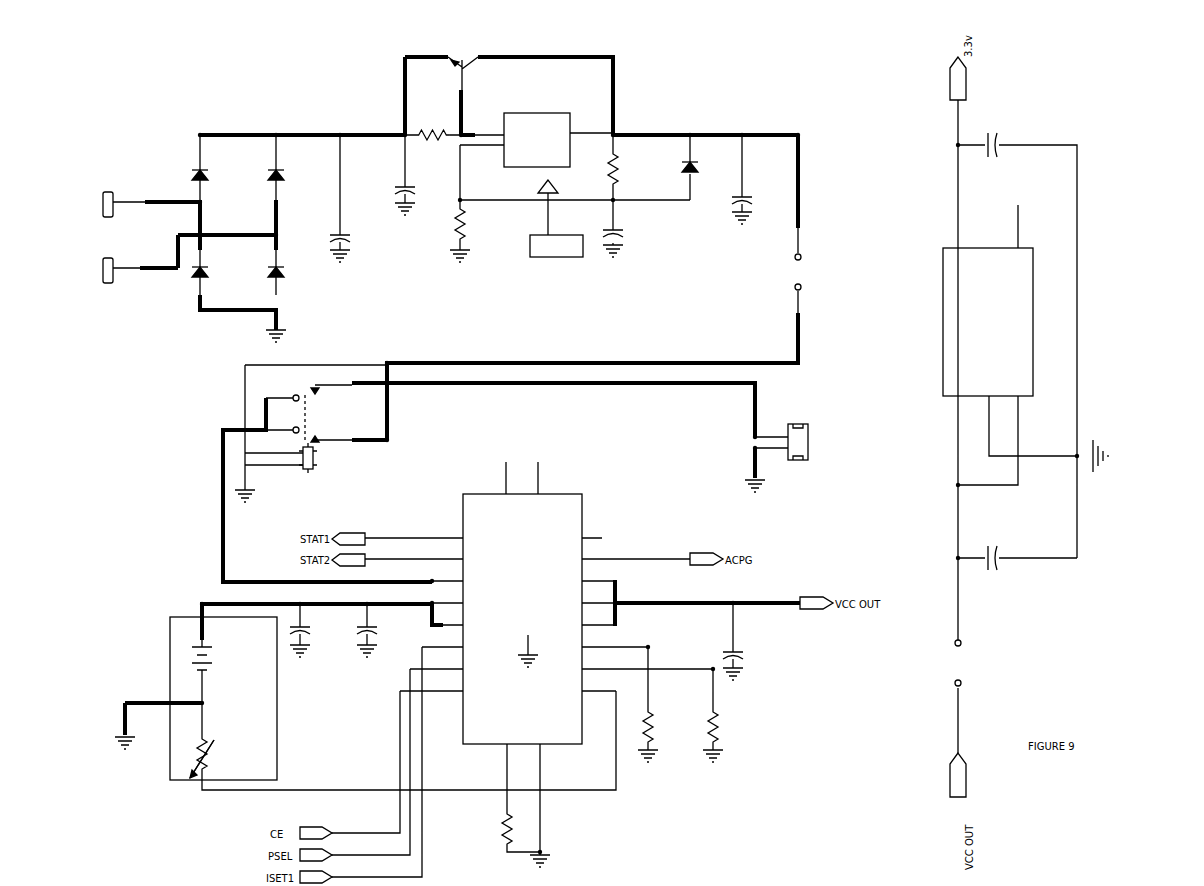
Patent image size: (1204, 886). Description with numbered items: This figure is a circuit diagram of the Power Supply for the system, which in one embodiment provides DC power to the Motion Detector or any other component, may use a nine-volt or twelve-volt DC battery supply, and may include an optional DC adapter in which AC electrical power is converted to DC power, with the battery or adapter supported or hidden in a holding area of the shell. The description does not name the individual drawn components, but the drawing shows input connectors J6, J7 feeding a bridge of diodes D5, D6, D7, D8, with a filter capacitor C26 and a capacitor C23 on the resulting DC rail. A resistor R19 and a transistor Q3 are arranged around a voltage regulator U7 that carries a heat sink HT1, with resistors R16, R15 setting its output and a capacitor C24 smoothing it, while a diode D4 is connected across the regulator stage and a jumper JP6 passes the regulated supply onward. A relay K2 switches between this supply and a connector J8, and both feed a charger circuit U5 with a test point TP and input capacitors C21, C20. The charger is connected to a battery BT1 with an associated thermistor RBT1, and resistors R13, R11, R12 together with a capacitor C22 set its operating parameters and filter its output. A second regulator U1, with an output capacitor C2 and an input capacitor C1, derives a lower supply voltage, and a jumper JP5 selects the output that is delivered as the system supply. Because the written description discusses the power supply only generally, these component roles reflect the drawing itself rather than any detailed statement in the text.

The connector J6 TYCO 62409-1 J6 is at (138, 192).
The connector J7 TYCO 62409-1 J7 is at (138, 285).
The diode 1N5821 D5 is at (226, 173).
The diode 1N5821 D6 is at (302, 173).
The diode 1N5821 D7 is at (226, 270).
The diode 1N5821 D8 is at (302, 270).
The capacitor C26 is at (553, 226).
The capacitor 0.1uF C23 is at (390, 194).
The resistor R19 is at (432, 121).
The PNP transistor Q3 is at (463, 59).
The LM317KC voltage regulator U7 is at (538, 140).
The heat sink HT1 is at (557, 227).
The resistor 816 ohms R16 is at (485, 233).
The resistor 240 ohms R15 is at (641, 169).
The capacitor 10uF C24 is at (627, 242).
The diode 1N4002 D4 is at (708, 172).
The jumper JP6 is at (807, 274).
The relay G6B-2114P-1-US-DC5 K2 is at (323, 433).
The connector J8 TYCO 640454-2 J8 is at (821, 458).
The BQ24031RHLRG4 charger IC U5 is at (544, 613).
The test point TP is at (527, 644).
The capacitor 1uF C21 is at (311, 640).
The capacitor 10uF C20 is at (381, 640).
The battery BT1 is at (192, 693).
The battery thermistor RBT1 is at (220, 756).
The resistor 2260 ohms R13 is at (497, 838).
The resistor 47k ohms R11 is at (673, 735).
The resistor 33k ohms R12 is at (739, 735).
The capacitor 10uF C22 is at (749, 664).
The capacitor 4.7uF C2 is at (1013, 116).
The TPS76333DBVT regulator U1 is at (977, 326).
The capacitor 1uF C1 is at (1006, 526).
The jumper JP5 is at (948, 665).